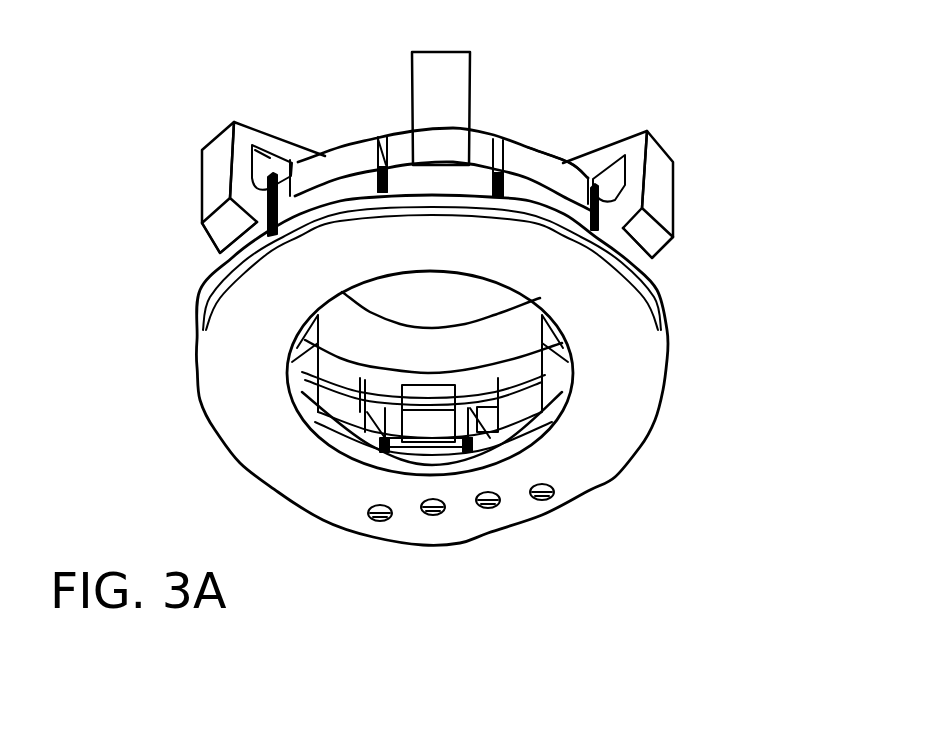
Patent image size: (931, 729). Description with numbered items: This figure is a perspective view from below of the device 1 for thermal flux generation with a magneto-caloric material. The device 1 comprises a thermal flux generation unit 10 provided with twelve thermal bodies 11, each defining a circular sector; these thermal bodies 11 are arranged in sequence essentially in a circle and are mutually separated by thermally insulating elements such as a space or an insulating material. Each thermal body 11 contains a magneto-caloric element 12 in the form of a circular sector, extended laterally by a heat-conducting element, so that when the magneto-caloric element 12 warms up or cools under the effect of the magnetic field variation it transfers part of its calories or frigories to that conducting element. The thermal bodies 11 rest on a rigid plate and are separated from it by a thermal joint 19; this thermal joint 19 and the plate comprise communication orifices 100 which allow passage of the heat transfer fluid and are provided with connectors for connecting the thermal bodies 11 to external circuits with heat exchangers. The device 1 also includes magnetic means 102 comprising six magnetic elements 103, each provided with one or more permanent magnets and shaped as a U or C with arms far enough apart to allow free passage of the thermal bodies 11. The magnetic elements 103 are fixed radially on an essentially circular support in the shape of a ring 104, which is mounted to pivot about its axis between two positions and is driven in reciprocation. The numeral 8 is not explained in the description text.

The device 1 is at (185, 178).
The base body 8 is at (592, 470).
The thermal flux generation unit 10 is at (266, 107).
The thermal body 11 is at (568, 145).
The magneto-caloric element 12 is at (335, 407).
The thermal joint 19 is at (622, 275).
The communication orifices 100 is at (385, 519).
The magnetic means 102 is at (676, 184).
The magnetic element 103 is at (662, 212).
The ring 104 is at (483, 128).